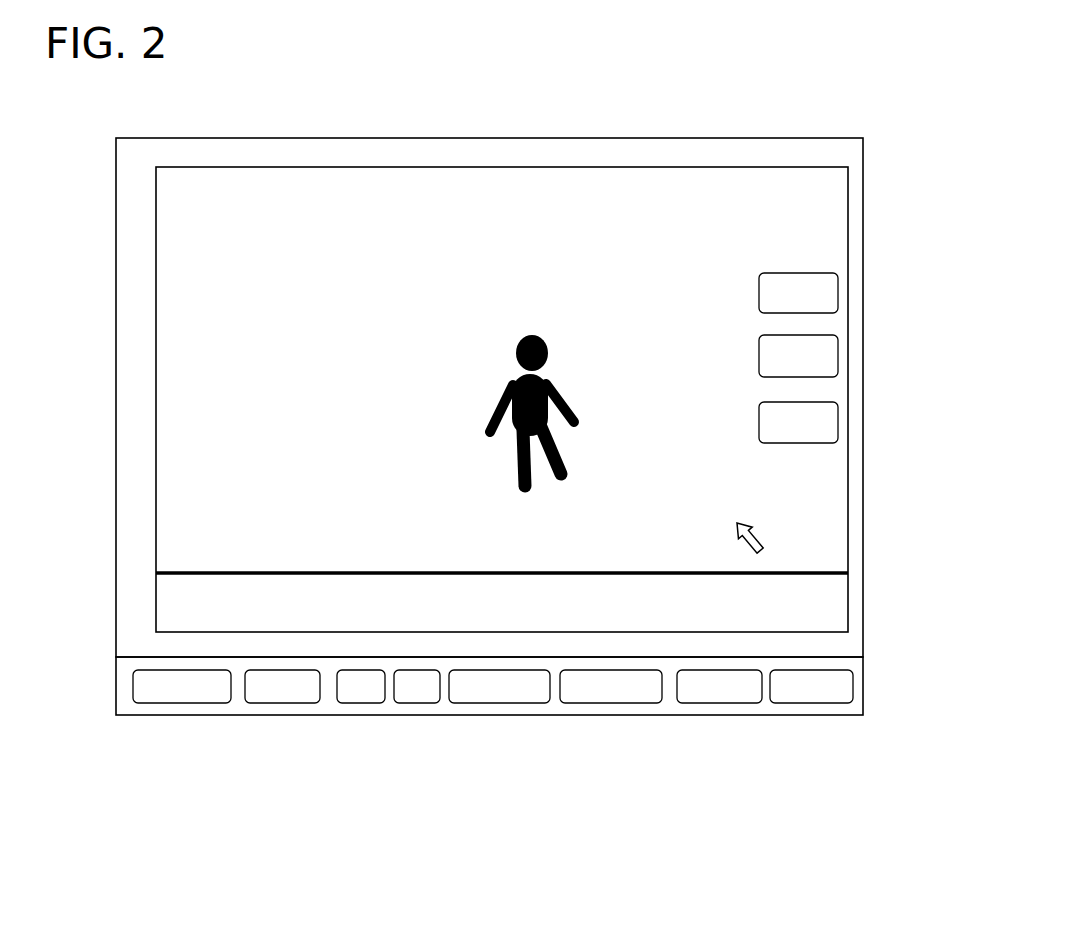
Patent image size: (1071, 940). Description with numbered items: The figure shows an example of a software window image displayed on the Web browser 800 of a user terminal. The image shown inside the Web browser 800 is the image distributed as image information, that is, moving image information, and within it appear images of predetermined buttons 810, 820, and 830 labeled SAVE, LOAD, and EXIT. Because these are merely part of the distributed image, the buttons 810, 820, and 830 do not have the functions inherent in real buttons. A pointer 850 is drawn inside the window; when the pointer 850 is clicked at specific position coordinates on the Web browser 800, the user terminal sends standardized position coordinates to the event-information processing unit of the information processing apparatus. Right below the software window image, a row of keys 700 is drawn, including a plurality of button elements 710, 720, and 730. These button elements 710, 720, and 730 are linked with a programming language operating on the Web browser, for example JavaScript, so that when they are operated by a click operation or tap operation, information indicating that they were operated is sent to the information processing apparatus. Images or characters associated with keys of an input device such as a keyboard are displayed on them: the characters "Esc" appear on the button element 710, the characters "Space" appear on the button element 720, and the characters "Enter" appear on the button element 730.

The Web browser 800 is at (241, 137).
The button 810 is at (838, 293).
The button 820 is at (838, 357).
The button 830 is at (838, 423).
The pointer 850 is at (765, 541).
The keyboard input unit 700 is at (865, 686).
The button element 710 is at (285, 704).
The button element 720 is at (713, 704).
The button element 730 is at (812, 704).